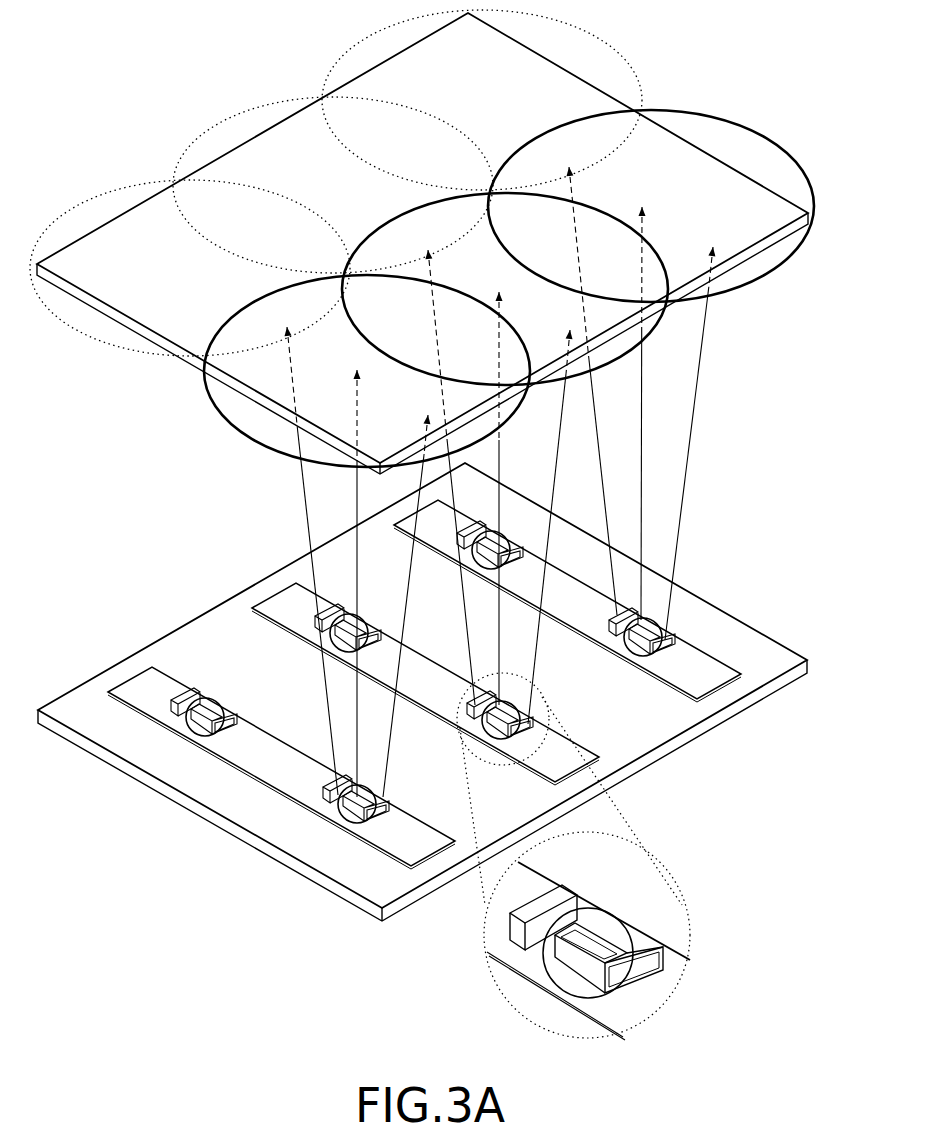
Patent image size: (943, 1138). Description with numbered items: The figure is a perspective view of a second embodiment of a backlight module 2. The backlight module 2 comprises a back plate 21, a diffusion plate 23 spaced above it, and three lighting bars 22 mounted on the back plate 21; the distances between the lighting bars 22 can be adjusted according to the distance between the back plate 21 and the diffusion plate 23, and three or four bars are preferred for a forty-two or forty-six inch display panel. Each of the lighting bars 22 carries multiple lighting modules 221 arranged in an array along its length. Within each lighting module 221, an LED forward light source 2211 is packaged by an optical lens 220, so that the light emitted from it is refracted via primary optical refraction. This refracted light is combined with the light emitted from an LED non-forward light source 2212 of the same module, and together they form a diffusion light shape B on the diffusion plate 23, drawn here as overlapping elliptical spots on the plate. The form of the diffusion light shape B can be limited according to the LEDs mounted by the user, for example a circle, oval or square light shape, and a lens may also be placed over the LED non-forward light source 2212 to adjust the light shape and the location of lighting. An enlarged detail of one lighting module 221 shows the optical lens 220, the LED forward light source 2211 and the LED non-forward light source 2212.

The backlight module 2 is at (85, 28).
The back plate 21 is at (195, 637).
The lighting bar 22 is at (132, 687).
The diffusion plate 23 is at (153, 210).
The optical lens 220 is at (523, 925).
The lighting module 221 is at (335, 818).
The LED forward light source 2211 is at (567, 968).
The LED non-forward light source 2212 is at (595, 990).
The diffusion light shape B is at (763, 302).